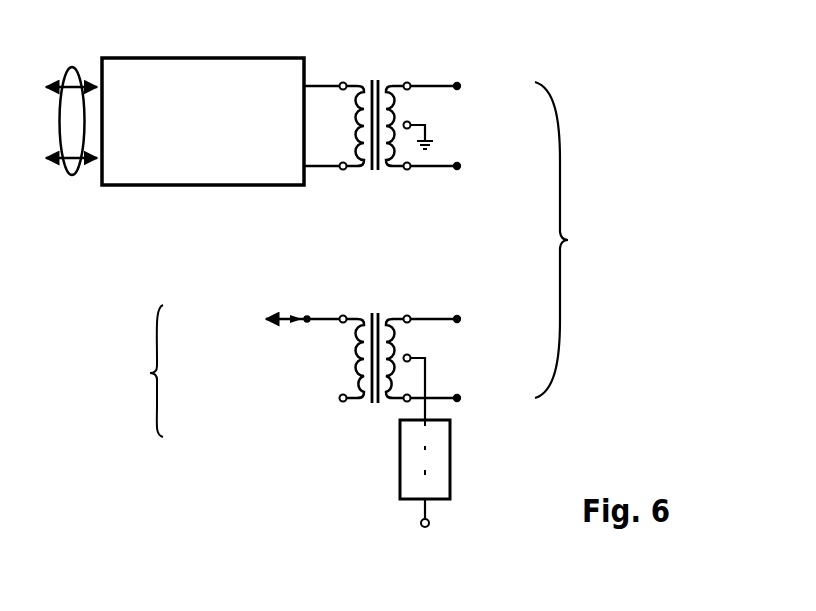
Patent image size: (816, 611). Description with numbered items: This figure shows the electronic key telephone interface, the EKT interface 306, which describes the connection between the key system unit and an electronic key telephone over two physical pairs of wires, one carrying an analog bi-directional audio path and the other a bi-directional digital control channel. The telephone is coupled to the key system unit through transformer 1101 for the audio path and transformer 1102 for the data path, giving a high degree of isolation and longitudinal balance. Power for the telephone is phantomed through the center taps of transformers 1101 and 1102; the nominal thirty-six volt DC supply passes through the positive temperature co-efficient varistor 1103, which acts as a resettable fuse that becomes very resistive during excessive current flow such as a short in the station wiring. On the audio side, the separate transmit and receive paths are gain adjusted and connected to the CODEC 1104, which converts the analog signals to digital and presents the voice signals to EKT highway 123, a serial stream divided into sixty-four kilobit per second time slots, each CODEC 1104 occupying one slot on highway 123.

The EKT highway 123 is at (72, 67).
The CODEC 1104 is at (199, 57).
The transformer 1101 is at (376, 74).
The transformer 1102 is at (377, 309).
The positive temperature co-efficient varistor 1103 is at (450, 449).
The EKT interface 306 is at (262, 499).